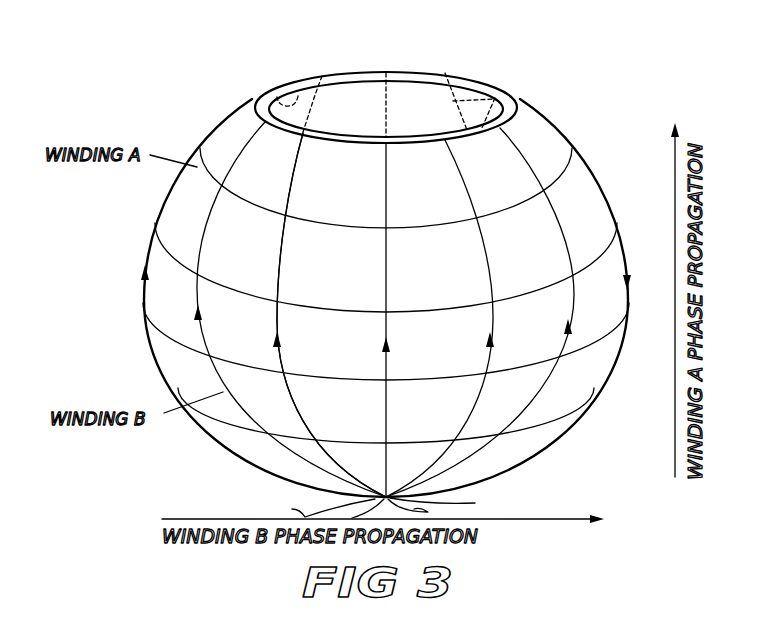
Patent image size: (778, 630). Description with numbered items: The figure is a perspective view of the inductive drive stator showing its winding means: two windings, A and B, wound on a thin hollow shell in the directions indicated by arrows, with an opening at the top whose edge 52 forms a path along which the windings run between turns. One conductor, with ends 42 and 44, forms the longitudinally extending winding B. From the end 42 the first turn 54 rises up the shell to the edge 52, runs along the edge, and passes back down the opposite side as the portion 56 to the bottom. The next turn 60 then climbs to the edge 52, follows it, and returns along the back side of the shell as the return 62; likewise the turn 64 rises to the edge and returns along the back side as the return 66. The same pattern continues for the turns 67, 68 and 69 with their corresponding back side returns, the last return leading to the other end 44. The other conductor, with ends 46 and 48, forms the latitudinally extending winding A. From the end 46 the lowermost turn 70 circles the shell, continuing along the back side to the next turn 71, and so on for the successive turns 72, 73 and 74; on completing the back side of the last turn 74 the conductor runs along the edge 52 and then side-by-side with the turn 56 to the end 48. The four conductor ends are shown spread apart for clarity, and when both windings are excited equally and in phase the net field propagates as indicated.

The conductor end 42 is at (424, 511).
The conductor end 44 is at (375, 511).
The conductor end 46 is at (322, 506).
The conductor end 48 is at (476, 503).
The edge of opening 52 is at (313, 135).
The winding turn 54 is at (230, 452).
The winding turn portion 56 is at (593, 175).
The winding turn 60 is at (219, 380).
The back side return 62 is at (482, 133).
The winding turn 64 is at (305, 427).
The back side return 66 is at (478, 68).
The winding turn 67 is at (404, 285).
The winding turn 68 is at (453, 318).
The winding turn 69 is at (483, 312).
The winding turn 70 is at (285, 434).
The winding turn 71 is at (230, 361).
The winding turn 72 is at (227, 285).
The winding turn 73 is at (313, 222).
The winding turn 74 is at (326, 286).